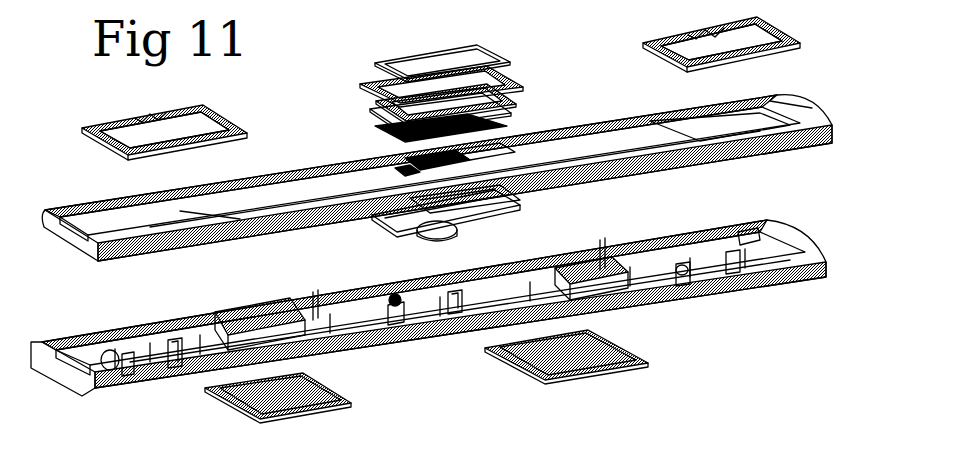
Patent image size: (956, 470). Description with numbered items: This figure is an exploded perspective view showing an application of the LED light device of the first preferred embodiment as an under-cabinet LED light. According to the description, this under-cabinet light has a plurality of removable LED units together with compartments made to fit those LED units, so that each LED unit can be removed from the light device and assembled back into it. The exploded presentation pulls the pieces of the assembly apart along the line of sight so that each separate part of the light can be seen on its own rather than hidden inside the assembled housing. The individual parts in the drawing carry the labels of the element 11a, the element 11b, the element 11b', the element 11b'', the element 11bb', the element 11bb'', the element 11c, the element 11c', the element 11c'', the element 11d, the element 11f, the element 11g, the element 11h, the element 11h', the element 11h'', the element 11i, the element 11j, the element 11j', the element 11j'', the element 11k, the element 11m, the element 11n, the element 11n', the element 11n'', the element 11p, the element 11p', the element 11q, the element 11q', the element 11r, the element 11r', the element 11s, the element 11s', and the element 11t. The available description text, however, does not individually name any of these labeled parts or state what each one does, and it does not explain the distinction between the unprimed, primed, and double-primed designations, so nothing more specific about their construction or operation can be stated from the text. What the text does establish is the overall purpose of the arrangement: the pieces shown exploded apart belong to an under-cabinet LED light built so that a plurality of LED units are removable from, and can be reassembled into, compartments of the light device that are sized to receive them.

The spacer layer 11a is at (388, 118).
The frame 11b is at (424, 83).
The frame 11b' is at (163, 127).
The frame 11b'' is at (700, 44).
The frame notch 11bb' is at (160, 103).
The frame notch 11bb'' is at (691, 21).
The panel 11c is at (415, 102).
The panel opening 11c' is at (138, 139).
The panel opening 11c'' is at (693, 53).
The cover plate 11d is at (433, 49).
The film 11f is at (490, 53).
The base plate 11g is at (382, 132).
The support block 11h is at (511, 127).
The recess 11h' is at (430, 189).
The recess 11h'' is at (720, 151).
The drive unit 11i is at (483, 160).
The slide plate 11j is at (431, 209).
The housing rim 11j' is at (437, 178).
The housing rim 11j'' is at (803, 140).
The circuit plate 11k is at (540, 215).
The cam disc 11m is at (445, 235).
The guide member 11n is at (415, 293).
The guide member 11n' is at (127, 337).
The guide member 11n'' is at (690, 240).
The partition plate 11p is at (591, 267).
The partition plate 11p' is at (252, 318).
The spring 11q is at (612, 242).
The spring 11q' is at (318, 294).
The bottom plate 11r is at (566, 367).
The bottom plate 11r' is at (296, 406).
The sheet 11s is at (568, 368).
The sheet 11s' is at (280, 412).
The lip 11t is at (103, 380).